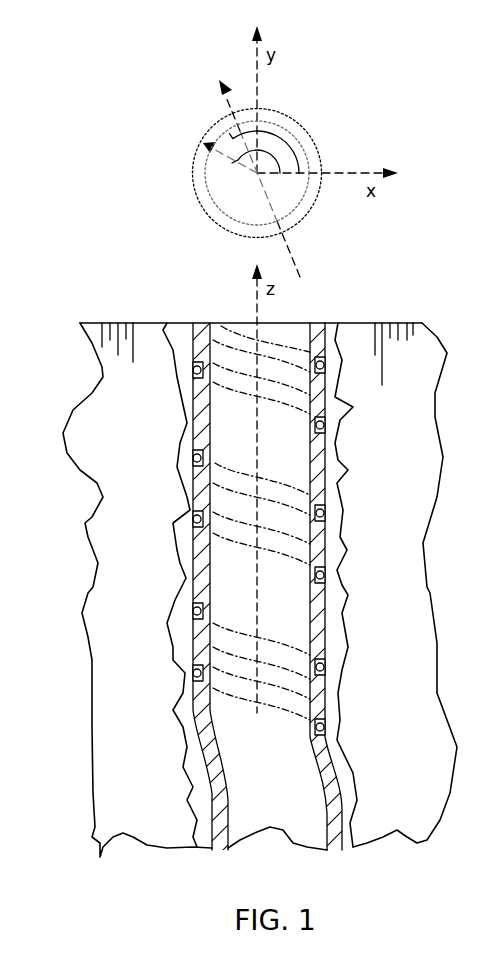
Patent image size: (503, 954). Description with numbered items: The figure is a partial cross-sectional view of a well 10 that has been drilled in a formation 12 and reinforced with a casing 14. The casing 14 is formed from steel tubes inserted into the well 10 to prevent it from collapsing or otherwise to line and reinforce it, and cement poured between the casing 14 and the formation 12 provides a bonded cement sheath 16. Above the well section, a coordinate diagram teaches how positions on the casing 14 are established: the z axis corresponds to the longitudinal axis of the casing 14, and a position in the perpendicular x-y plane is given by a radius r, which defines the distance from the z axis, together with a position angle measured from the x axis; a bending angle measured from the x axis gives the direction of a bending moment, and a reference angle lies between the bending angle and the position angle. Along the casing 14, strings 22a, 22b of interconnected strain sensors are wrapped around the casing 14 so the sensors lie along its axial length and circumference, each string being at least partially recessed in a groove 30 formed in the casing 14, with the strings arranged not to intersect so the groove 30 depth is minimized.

The well 10 is at (347, 580).
The formation 12 is at (141, 448).
The casing 14 is at (302, 122).
The bonded cement sheath 16 is at (337, 415).
The string of interconnected strain sensors 22a is at (192, 611).
The string of interconnected strain sensors 22b is at (192, 673).
The groove 30 is at (212, 618).
The radius r is at (217, 157).